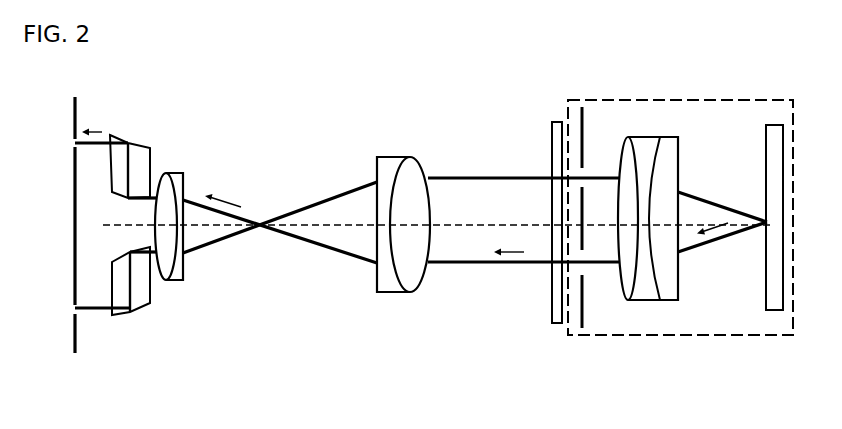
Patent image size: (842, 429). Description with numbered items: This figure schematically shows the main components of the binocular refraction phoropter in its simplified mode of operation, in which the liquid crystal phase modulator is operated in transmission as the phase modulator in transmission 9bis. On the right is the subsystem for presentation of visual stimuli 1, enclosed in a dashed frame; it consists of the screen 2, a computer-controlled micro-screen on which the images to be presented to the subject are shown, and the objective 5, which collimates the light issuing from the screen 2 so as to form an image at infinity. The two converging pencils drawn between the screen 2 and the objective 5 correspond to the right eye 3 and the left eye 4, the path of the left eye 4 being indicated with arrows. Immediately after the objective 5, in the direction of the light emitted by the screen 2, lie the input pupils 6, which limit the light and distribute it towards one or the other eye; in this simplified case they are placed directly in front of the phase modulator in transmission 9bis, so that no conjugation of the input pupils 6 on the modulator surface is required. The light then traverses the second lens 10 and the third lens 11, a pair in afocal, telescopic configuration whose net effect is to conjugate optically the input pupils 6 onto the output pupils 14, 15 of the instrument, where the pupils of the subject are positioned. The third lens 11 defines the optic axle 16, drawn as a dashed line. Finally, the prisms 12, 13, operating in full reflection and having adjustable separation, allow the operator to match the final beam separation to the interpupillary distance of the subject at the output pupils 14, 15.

The subsystem for presentation of visual stimuli 1 is at (678, 337).
The screen 2 is at (772, 124).
The right eye 3 is at (718, 197).
The left eye 4 is at (727, 240).
The objective 5 is at (640, 136).
The input pupils 6 is at (588, 313).
The phase modulator in transmission 9bis is at (553, 121).
The second lens 10 is at (390, 152).
The third lens 11 is at (173, 283).
The prism 12 is at (125, 318).
The prism 13 is at (125, 133).
The output pupil 14 is at (72, 142).
The output pupil 15 is at (72, 306).
The optic axle 16 is at (118, 229).